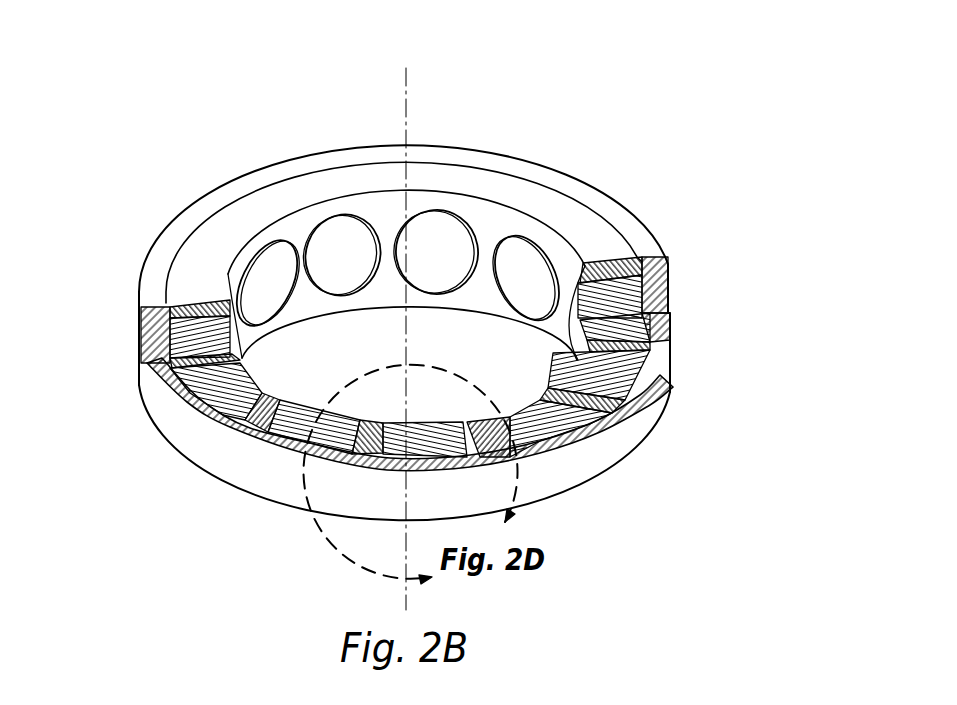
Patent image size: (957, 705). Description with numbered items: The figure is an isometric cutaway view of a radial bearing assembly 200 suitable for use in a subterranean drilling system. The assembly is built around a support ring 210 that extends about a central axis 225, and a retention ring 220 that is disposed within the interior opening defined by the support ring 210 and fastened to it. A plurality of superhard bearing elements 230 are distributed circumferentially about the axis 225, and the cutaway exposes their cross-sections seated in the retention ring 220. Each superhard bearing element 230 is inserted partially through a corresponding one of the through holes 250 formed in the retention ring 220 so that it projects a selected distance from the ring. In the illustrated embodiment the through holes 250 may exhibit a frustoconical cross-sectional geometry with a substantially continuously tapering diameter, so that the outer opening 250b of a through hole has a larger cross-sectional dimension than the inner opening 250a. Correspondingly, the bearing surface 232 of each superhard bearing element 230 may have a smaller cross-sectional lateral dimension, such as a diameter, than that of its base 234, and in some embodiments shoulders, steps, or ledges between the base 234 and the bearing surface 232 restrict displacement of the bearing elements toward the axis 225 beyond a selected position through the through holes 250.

The radial bearing assembly 200 is at (683, 131).
The support ring 210 is at (633, 438).
The retention ring 220 is at (192, 270).
The axis 225 is at (412, 120).
The superhard bearing elements 230 is at (625, 364).
The bearing surface 232 is at (578, 344).
The base 234 is at (630, 384).
The through holes 250 is at (248, 405).
The inner opening 250a is at (272, 403).
The outer opening 250b is at (223, 428).